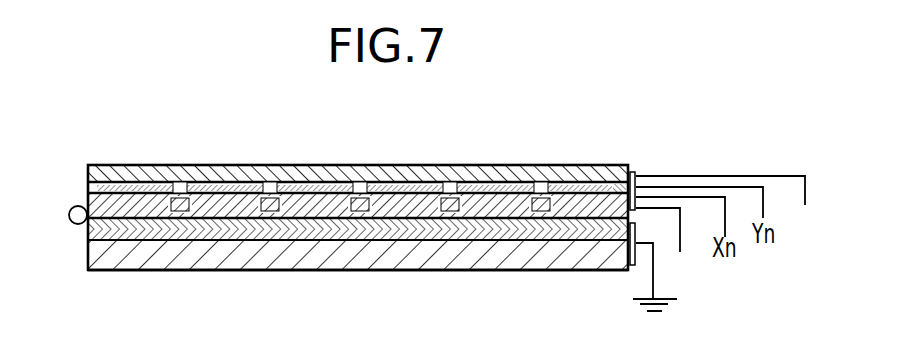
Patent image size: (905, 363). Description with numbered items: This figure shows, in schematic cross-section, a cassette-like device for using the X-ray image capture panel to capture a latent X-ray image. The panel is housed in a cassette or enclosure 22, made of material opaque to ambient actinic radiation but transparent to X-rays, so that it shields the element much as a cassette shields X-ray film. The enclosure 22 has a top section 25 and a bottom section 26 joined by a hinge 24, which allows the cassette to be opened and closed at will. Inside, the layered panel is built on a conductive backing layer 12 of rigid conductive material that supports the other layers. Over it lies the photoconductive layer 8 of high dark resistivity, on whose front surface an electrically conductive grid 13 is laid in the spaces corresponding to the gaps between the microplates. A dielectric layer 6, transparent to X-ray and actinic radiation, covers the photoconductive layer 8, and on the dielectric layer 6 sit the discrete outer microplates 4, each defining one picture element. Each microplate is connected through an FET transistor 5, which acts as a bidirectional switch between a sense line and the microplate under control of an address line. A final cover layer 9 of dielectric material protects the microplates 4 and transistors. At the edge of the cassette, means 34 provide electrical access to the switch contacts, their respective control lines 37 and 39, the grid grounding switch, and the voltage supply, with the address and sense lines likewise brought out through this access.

The cassette or enclosure 22 is at (134, 137).
The top section 25 is at (402, 166).
The outer microplates 4 is at (230, 183).
The final cover layer 9 is at (179, 182).
The FET transistor 5 is at (348, 183).
The electrically conductive grid 13 is at (465, 182).
The dielectric layer 6 is at (88, 196).
The hinge 24 is at (69, 210).
The photoconductive layer 8 is at (88, 240).
The conductive backing layer 12 is at (140, 262).
The bottom section 26 is at (410, 272).
The means for electrical access 34 is at (637, 233).
The control line 37 is at (725, 205).
The control line 39 is at (664, 244).